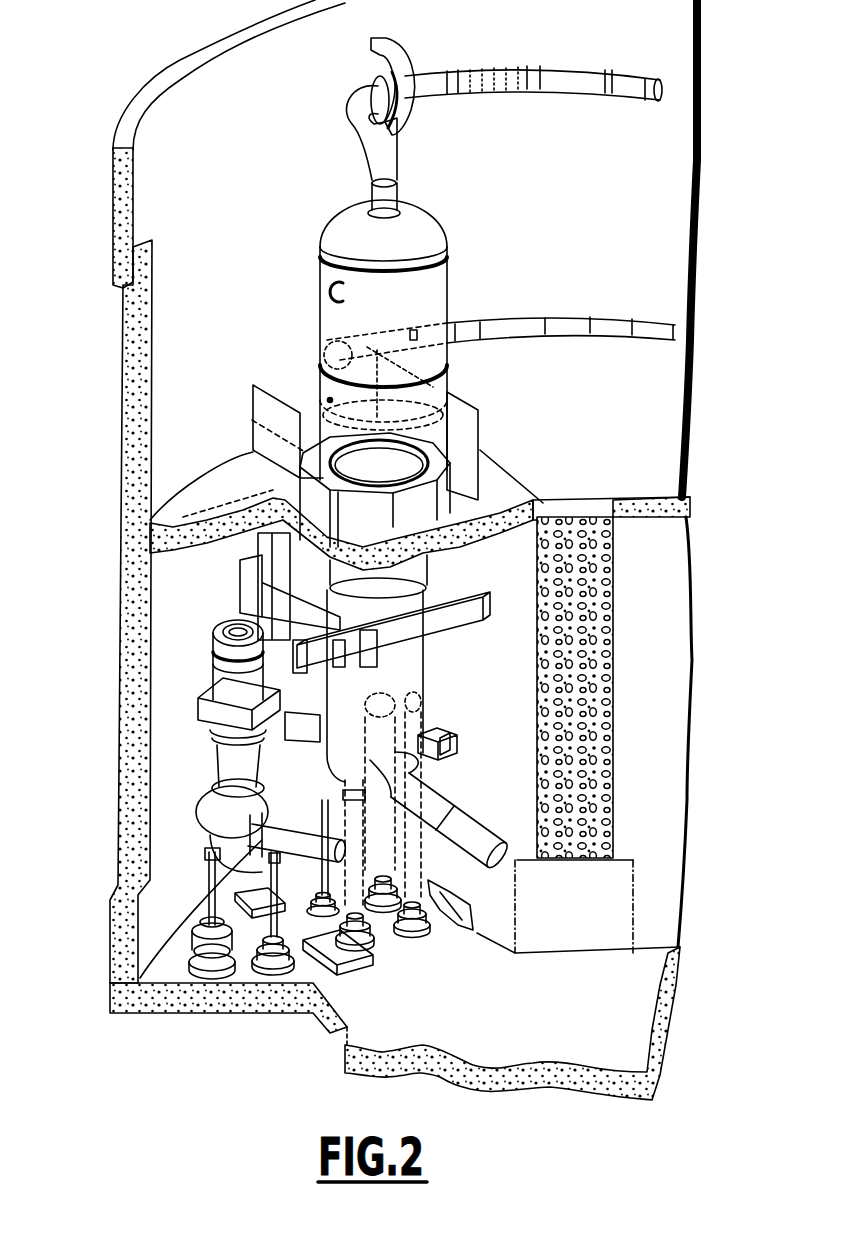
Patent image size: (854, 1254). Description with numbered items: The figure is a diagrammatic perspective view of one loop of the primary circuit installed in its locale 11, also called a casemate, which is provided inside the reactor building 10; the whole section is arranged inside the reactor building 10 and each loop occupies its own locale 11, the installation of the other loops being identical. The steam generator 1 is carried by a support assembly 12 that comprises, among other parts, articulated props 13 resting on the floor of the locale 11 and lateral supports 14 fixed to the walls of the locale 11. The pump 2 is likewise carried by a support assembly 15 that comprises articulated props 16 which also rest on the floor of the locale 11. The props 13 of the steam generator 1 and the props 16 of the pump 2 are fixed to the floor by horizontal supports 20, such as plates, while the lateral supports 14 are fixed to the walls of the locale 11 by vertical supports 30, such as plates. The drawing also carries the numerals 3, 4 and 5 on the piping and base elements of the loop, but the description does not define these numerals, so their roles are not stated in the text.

The steam generator 1 is at (453, 296).
The pump 2 is at (225, 800).
The discharge pipe 3 is at (441, 816).
The base plate 4 is at (304, 931).
The pump housing column 5 is at (314, 812).
The reactor building 10 is at (122, 405).
The locale 11 is at (180, 640).
The support assembly 12 is at (430, 858).
The articulated props 13 is at (440, 880).
The lateral supports 14 is at (420, 745).
The support assembly 15 is at (398, 162).
The articulated props 16 is at (202, 872).
The horizontal supports 20 is at (398, 930).
The vertical supports 30 is at (452, 735).